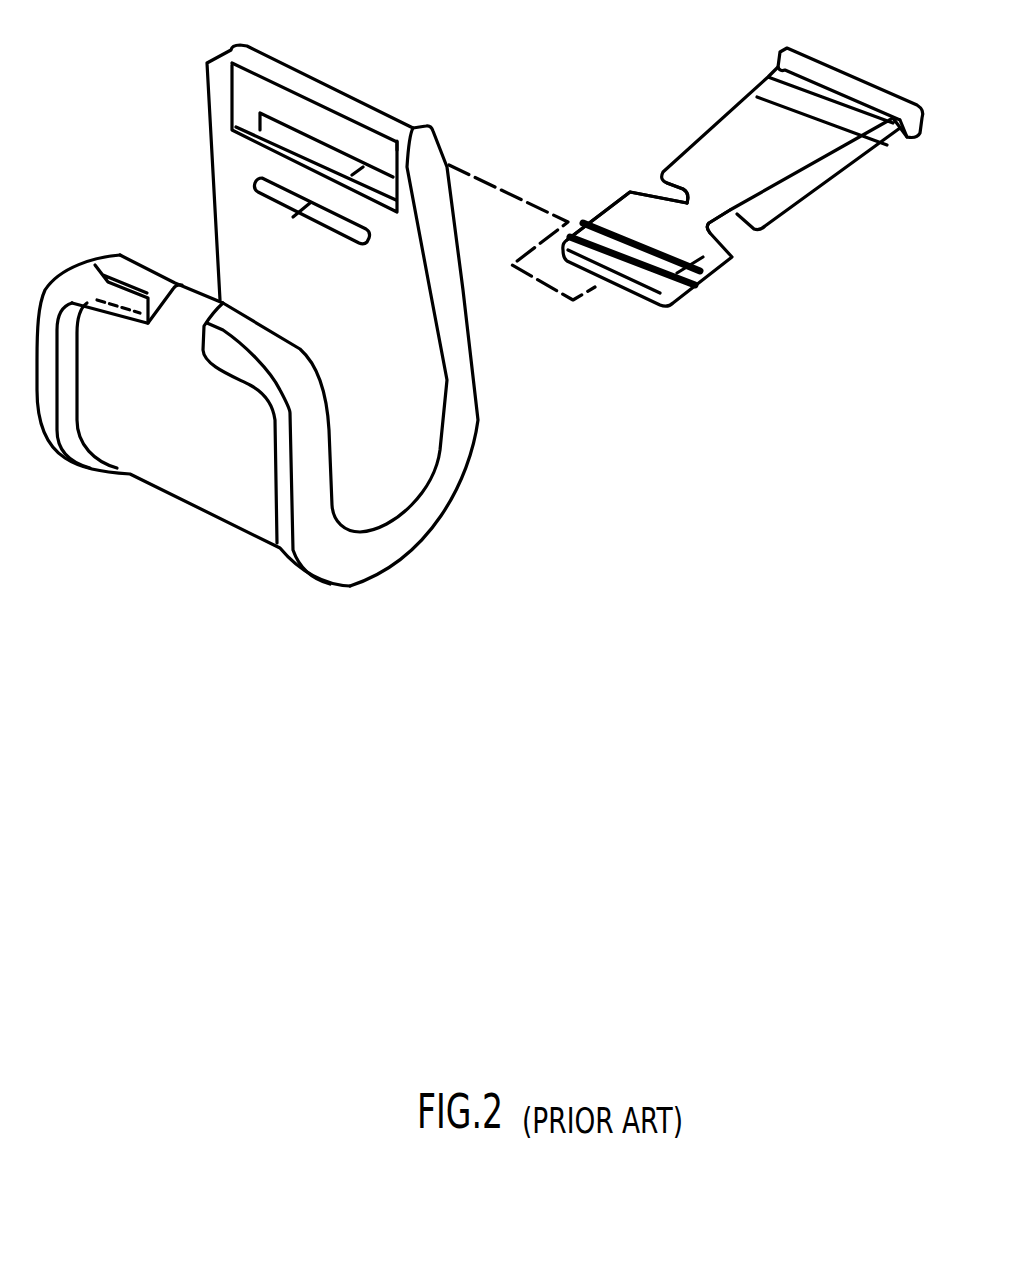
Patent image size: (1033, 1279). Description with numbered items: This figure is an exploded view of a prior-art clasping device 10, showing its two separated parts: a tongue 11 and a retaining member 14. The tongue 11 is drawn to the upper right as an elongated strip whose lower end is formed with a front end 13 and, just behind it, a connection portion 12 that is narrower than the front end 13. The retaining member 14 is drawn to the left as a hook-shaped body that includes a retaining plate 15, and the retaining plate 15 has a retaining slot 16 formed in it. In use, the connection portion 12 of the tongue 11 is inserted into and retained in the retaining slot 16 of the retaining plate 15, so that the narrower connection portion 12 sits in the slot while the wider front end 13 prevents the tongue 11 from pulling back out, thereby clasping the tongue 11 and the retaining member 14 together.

The clasping device 10 is at (478, 422).
The tongue 11 is at (843, 168).
The connection portion 12 is at (687, 205).
The front end 13 is at (705, 257).
The retaining member 14 is at (140, 433).
The retaining plate 15 is at (100, 275).
The retaining slot 16 is at (188, 352).